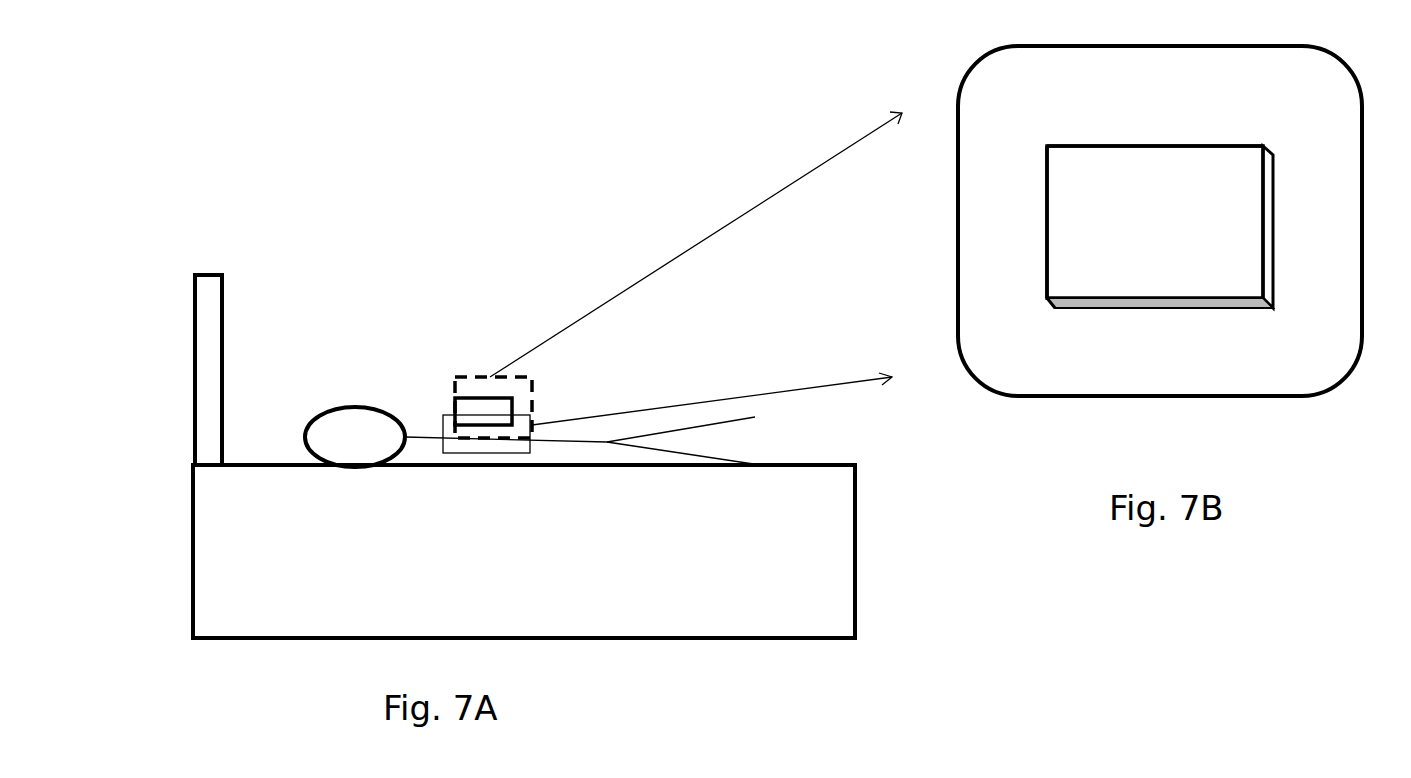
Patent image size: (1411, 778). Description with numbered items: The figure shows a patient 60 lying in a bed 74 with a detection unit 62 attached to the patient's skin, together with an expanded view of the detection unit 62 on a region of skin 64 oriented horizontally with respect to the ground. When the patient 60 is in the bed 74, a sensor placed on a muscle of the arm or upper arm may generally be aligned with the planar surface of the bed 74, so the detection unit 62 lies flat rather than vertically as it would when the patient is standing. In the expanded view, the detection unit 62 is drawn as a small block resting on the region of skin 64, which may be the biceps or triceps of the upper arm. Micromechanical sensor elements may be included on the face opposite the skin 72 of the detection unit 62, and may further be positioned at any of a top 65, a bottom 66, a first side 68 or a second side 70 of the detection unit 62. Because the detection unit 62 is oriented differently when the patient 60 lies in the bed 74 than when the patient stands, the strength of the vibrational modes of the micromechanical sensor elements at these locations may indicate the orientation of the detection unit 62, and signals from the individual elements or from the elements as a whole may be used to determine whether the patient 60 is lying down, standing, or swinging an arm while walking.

In FIG. 7A, the patient 60 is at (393, 328).
In FIG. 7A, the bed 74 is at (872, 590).
In FIG. 7B, the detection unit 62 is at (1077, 317).
In FIG. 7B, the region of skin 64 is at (1345, 313).
In FIG. 7B, the top 65 is at (1047, 212).
In FIG. 7B, the bottom 66 is at (1272, 228).
In FIG. 7B, the first side 68 is at (1180, 152).
In FIG. 7B, the second side 70 is at (1177, 312).
In FIG. 7B, the face opposite the skin 72 is at (1172, 243).